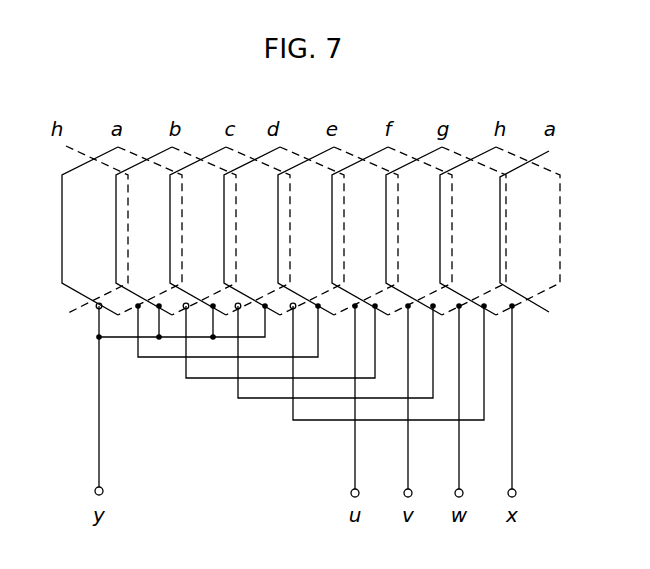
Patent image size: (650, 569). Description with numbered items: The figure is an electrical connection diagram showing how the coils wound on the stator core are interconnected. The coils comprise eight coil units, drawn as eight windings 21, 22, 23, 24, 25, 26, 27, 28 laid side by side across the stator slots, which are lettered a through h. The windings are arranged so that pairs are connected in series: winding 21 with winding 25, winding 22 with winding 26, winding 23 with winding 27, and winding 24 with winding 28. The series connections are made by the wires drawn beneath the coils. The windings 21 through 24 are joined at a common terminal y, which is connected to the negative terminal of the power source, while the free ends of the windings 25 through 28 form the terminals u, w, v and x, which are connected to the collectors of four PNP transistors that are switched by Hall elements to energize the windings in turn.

The winding 21 is at (102, 156).
The winding 22 is at (156, 156).
The winding 23 is at (210, 156).
The winding 24 is at (264, 156).
The winding 25 is at (318, 156).
The winding 26 is at (372, 156).
The winding 27 is at (426, 156).
The winding 28 is at (480, 156).